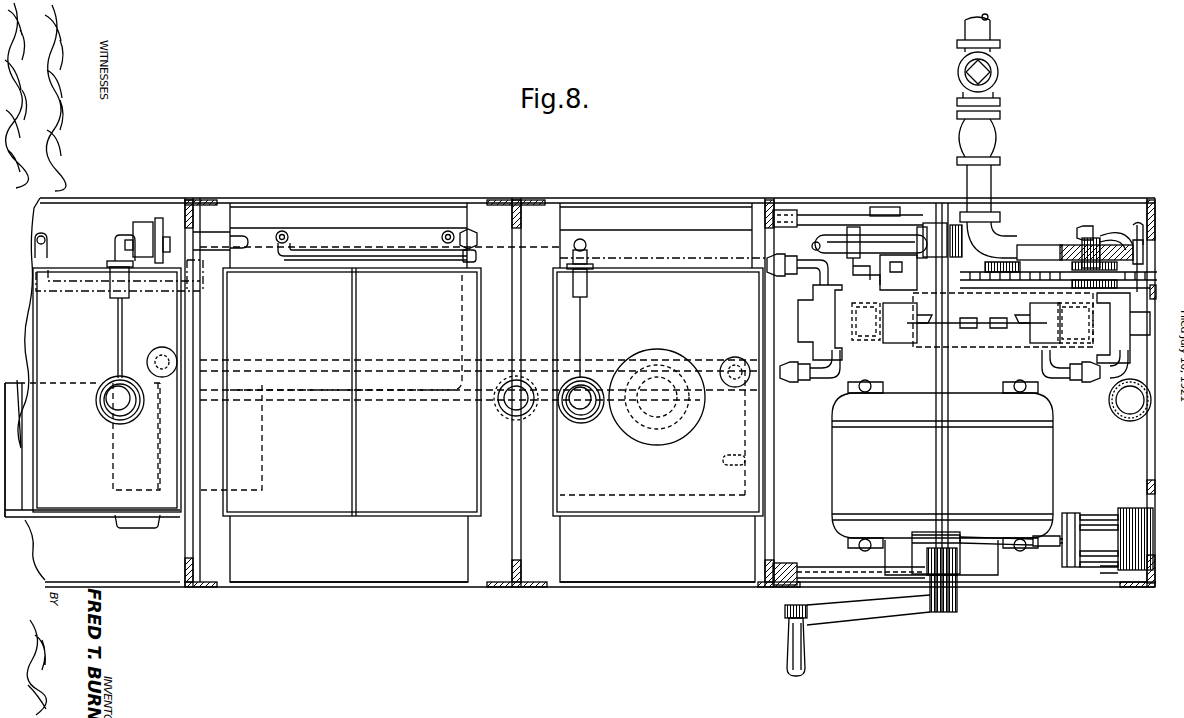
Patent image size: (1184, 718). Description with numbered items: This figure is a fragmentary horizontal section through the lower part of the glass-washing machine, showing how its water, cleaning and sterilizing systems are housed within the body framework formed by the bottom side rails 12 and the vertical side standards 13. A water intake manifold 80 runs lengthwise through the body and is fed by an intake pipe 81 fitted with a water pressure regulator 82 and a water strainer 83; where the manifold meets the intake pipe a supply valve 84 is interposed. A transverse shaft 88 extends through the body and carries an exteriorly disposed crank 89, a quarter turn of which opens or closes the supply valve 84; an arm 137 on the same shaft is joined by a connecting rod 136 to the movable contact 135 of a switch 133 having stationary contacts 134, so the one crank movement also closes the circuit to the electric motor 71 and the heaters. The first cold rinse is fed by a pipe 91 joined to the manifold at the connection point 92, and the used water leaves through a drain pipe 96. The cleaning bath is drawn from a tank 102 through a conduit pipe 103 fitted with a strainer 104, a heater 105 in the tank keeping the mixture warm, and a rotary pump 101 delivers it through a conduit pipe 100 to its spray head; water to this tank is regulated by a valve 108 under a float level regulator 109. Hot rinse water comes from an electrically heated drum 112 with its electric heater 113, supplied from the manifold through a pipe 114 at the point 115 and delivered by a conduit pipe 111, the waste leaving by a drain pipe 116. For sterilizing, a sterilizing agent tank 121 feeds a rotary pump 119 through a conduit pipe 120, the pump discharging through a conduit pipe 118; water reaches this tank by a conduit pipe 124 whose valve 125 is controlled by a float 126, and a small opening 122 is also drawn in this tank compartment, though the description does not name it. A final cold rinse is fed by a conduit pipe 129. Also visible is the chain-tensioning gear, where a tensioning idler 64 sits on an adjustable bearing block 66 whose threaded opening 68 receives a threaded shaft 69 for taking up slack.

The bottom side rails 12 is at (348, 588).
The vertical side standards 13 is at (536, 588).
The tensioning idler 64 is at (1077, 266).
The adjustable bearing block 66 is at (1092, 236).
The threaded opening 68 is at (1093, 258).
The threaded shaft 69 is at (1128, 250).
The electric motor 71 is at (832, 484).
The water intake manifold 80 is at (697, 244).
The intake pipe 81 is at (965, 178).
The water pressure regulator 82 is at (990, 135).
The water strainer 83 is at (1000, 72).
The supply valve 84 is at (885, 222).
The transverse shaft 88 is at (936, 462).
The crank 89 is at (872, 614).
The pipe 91 is at (990, 250).
The connection point 92 is at (822, 237).
The drain pipe 96 is at (1128, 403).
The conduit pipe 100 is at (1054, 227).
The rotary pump 101 is at (1001, 328).
The tank 102 is at (697, 508).
The conduit pipe 103 is at (1060, 380).
The strainer 104 is at (748, 340).
The heater 105 is at (662, 432).
The valve 108 is at (590, 290).
The float level regulator 109 is at (585, 392).
The conduit pipe 111 is at (449, 231).
The electrically heated drum 112 is at (512, 492).
The electric heater 113 is at (15, 512).
The pipe 114 is at (290, 392).
The connection point 115 is at (457, 252).
The drain pipe 116 is at (512, 402).
The conduit pipe 118 is at (434, 267).
The rotary pump 119 is at (826, 300).
The conduit pipe 120 is at (432, 362).
The sterilizing agent tank 121 is at (116, 394).
The opening 122 is at (160, 355).
The conduit pipe 124 is at (240, 241).
The valve 125 is at (120, 280).
The float 126 is at (115, 390).
The conduit pipe 129 is at (45, 257).
The switch 133 is at (1140, 570).
The stationary contacts 134 is at (1105, 570).
The movable contact 135 is at (1082, 522).
The connecting rod 136 is at (983, 537).
The arm 137 is at (913, 533).